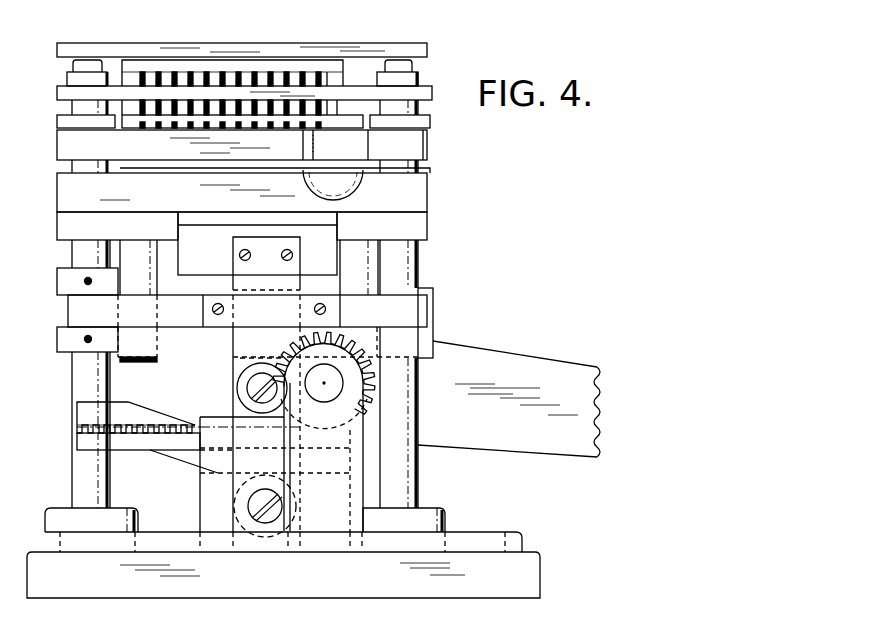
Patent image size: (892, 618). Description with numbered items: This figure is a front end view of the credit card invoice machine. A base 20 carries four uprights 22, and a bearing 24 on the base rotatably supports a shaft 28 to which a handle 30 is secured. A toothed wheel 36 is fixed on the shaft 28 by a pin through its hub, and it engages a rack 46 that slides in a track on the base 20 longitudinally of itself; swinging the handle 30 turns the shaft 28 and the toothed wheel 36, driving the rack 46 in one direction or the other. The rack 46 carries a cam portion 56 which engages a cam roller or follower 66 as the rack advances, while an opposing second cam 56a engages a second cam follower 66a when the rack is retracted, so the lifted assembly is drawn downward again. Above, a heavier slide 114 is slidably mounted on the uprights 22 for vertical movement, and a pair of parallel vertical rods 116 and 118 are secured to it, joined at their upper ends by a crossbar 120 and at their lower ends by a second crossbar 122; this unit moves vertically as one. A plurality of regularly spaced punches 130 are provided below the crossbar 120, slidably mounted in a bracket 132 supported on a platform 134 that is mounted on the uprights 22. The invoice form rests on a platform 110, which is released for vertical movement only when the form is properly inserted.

The base 20 is at (538, 581).
The uprights 22 is at (80, 374).
The bearing 24 is at (356, 480).
The shaft 28 is at (330, 383).
The handle 30 is at (553, 447).
The toothed wheel 36 is at (361, 354).
The rack 46 is at (133, 445).
The cam portion 56 is at (192, 423).
The second cam 56a is at (185, 468).
The cam roller 66 is at (244, 390).
The second cam follower 66a is at (262, 532).
The platform 110 is at (430, 190).
The slide 114 is at (432, 144).
The rod 116 is at (412, 66).
The rod 118 is at (72, 68).
The crossbar 120 is at (430, 47).
The second crossbar 122 is at (435, 332).
The punches 130 is at (279, 72).
The bracket 132 is at (343, 77).
The platform 134 is at (57, 96).